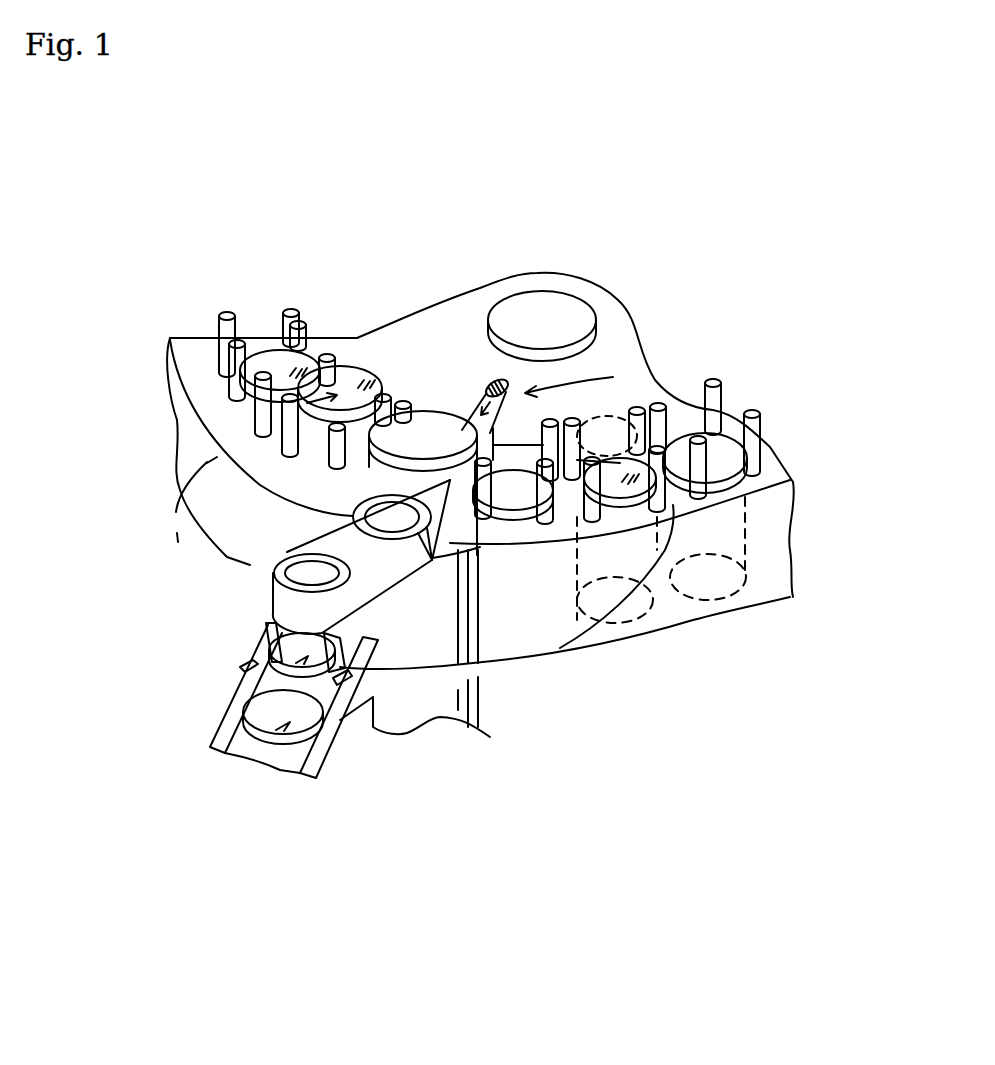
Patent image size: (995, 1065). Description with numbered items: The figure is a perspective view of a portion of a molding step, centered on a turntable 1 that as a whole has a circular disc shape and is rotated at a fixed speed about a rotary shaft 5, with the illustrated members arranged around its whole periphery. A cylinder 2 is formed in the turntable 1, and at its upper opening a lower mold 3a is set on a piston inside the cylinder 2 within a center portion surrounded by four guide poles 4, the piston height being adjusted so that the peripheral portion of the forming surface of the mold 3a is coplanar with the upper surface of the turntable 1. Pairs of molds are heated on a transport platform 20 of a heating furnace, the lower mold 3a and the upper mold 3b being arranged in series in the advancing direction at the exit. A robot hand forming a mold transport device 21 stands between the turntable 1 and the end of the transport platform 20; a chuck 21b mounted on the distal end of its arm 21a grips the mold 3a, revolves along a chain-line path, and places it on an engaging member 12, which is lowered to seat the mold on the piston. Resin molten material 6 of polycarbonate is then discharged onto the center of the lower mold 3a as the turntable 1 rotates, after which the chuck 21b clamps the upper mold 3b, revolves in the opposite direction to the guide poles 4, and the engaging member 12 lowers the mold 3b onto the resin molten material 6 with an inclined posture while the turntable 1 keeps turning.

The turntable 1 is at (190, 340).
The cylinder 2 is at (747, 537).
The lower mold 3a is at (730, 437).
The upper mold 3b is at (305, 357).
The guide pole 4 is at (709, 383).
The rotary shaft 5 is at (547, 300).
The resin molten material 6 is at (485, 390).
The engaging member 12 is at (670, 417).
The transport platform 20 is at (318, 777).
The mold transport device 21 is at (483, 667).
The arm 21a is at (273, 583).
The chuck 21b is at (262, 627).